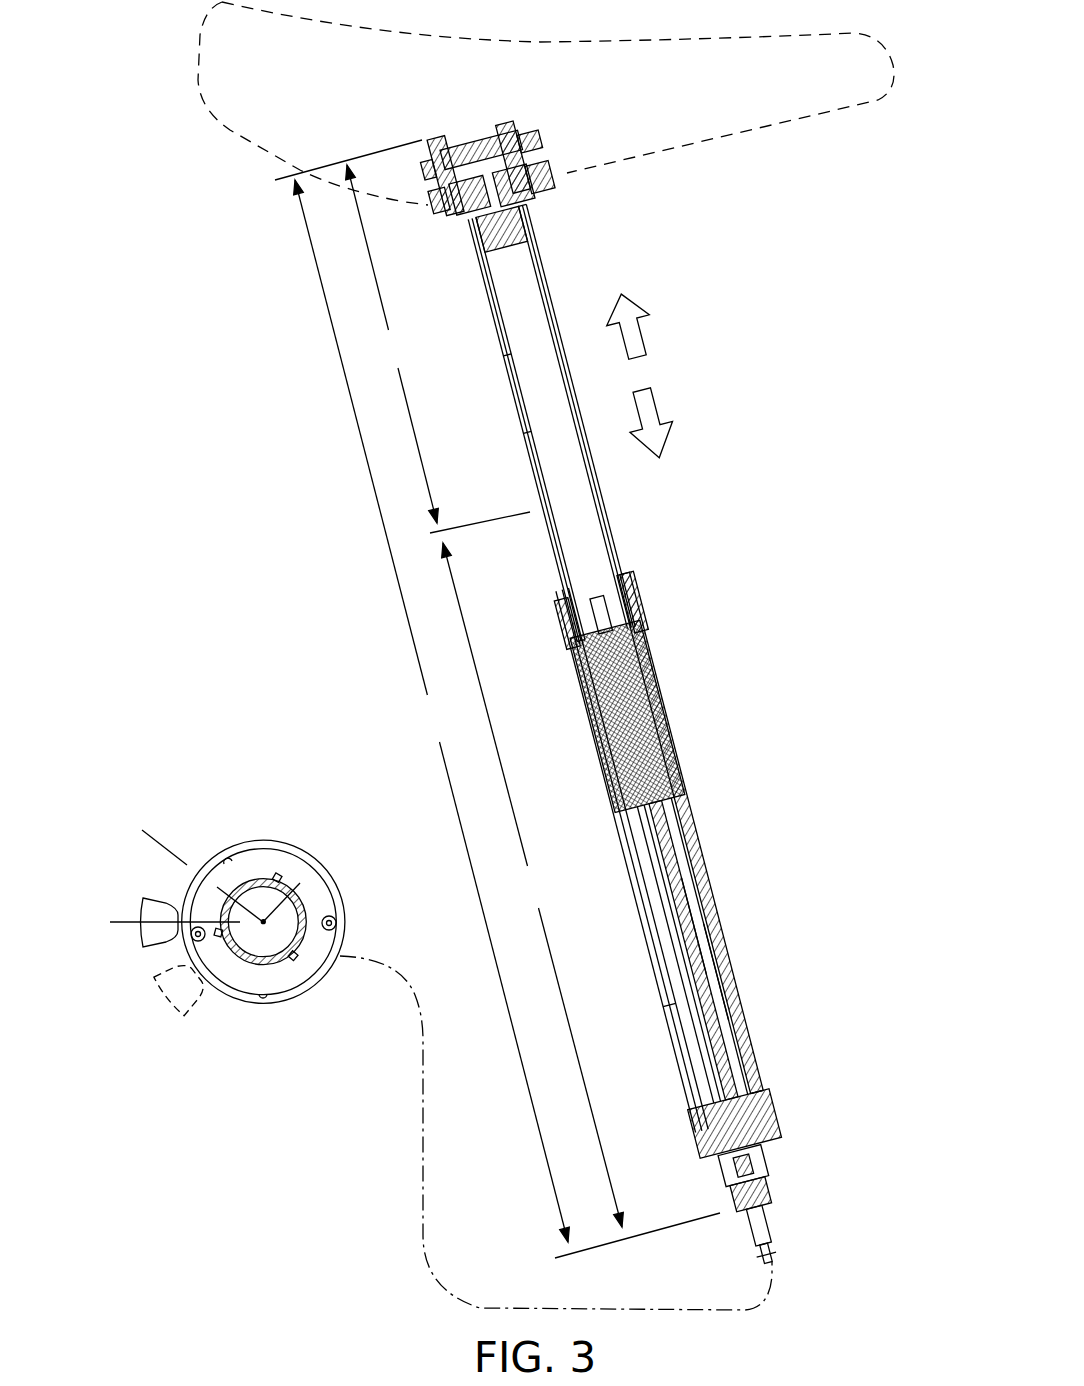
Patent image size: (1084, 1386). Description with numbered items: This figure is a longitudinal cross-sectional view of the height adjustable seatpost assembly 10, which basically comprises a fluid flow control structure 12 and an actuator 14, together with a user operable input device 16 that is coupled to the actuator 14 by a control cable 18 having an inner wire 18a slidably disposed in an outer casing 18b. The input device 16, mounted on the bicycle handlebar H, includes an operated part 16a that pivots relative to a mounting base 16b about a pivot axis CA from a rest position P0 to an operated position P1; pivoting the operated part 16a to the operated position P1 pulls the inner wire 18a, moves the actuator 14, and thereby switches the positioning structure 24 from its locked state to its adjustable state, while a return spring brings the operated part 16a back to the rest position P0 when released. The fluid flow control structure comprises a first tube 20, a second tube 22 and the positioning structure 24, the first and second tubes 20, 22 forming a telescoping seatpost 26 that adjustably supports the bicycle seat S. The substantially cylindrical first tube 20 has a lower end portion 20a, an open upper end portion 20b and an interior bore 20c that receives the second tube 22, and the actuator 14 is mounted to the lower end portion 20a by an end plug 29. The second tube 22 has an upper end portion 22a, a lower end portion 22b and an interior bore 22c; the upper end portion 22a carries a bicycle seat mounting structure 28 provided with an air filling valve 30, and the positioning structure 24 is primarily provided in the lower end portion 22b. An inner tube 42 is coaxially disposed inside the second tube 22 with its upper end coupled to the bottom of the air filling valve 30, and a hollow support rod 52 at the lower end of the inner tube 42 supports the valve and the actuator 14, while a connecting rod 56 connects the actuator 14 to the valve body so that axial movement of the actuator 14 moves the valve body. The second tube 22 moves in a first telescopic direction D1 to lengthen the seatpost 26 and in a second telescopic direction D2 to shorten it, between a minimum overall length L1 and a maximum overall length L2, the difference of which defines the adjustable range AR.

The height adjustable seatpost assembly 10 is at (800, 427).
The fluid flow control structure 12 is at (620, 689).
The actuator 14 is at (777, 1163).
The user operable input device 16 is at (237, 919).
The operated part 16a is at (160, 947).
The mounting base 16b is at (293, 1000).
The control cable 18 is at (423, 1163).
The inner wire 18a is at (770, 1252).
The outer casing 18b is at (768, 1232).
The first tube 20 is at (708, 855).
The first or lower end portion 20a is at (772, 1120).
The second or upper end portion 20b is at (558, 610).
The interior bore 20c is at (676, 1030).
The second tube 22 is at (608, 498).
The first or upper end portion 22a is at (535, 236).
The second or lower end portion 22b is at (567, 575).
The interior bore 22c is at (543, 463).
The positioning structure 24 is at (594, 568).
The telescoping seatpost 26 is at (690, 470).
The bicycle seat mounting structure 28 is at (462, 215).
The end plug 29 is at (762, 1112).
The air filling valve 30 is at (550, 192).
The inner tube 42 is at (505, 338).
The support rod 52 is at (700, 933).
The connecting rod 56 is at (712, 990).
The bicycle seat S is at (242, 150).
The adjustable range AR is at (438, 349).
The minimum overall length L1 is at (533, 885).
The maximum overall length L2 is at (497, 699).
The first telescopic direction D1 is at (643, 338).
The second telescopic direction D2 is at (660, 398).
The rest position P0 is at (123, 923).
The operated position P1 is at (168, 842).
The bicycle handlebar H is at (300, 883).
The pivot axis CA is at (263, 922).